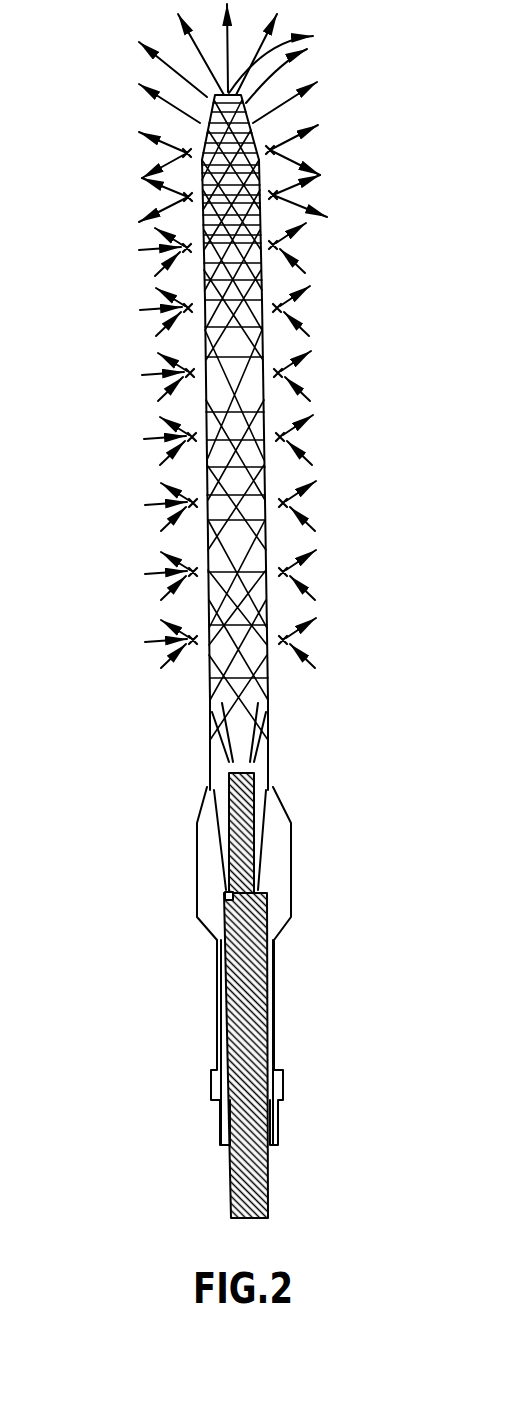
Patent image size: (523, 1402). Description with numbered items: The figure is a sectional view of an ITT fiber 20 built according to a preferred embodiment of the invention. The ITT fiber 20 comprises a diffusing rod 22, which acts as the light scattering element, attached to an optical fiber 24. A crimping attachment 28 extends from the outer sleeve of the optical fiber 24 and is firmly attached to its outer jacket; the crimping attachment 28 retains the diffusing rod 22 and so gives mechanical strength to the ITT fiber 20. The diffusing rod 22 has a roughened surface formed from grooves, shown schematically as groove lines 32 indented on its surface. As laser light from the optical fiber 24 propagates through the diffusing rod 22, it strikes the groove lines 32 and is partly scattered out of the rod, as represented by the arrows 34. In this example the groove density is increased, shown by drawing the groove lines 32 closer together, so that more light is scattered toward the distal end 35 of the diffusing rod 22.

The ITT fiber 20 is at (325, 995).
The diffusing rod 22 is at (214, 752).
The optical fiber 24 is at (263, 1007).
The crimping attachment 28 is at (280, 886).
The groove lines 32 is at (250, 213).
The arrows 34 is at (170, 440).
The distal end 35 is at (310, 44).